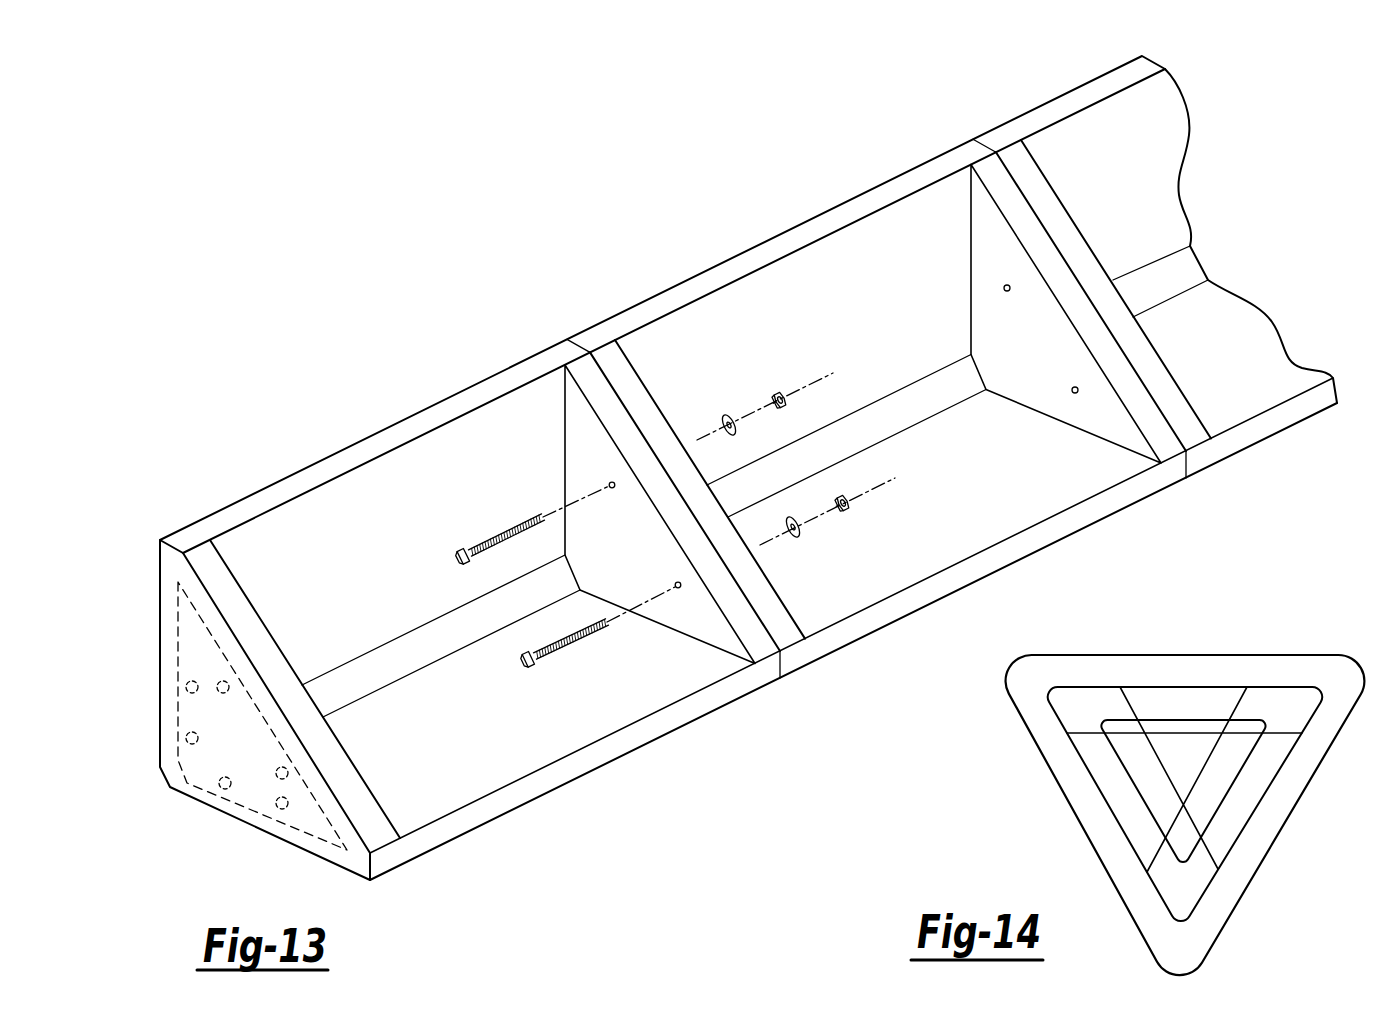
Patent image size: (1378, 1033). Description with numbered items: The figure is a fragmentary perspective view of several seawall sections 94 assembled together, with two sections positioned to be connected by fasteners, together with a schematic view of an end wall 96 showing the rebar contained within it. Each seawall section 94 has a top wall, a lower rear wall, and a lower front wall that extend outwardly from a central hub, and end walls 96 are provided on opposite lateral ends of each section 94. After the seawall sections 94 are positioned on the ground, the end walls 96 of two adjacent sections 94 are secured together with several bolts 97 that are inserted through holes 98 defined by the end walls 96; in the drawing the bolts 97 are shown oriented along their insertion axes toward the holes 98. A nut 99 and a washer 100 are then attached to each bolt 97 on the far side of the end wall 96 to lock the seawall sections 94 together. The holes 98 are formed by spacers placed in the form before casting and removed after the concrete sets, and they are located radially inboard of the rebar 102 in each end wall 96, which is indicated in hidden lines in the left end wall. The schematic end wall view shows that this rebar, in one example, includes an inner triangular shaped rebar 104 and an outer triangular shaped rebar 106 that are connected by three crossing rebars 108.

In FIG. 13, the seawall section 94 is at (347, 432).
In FIG. 13, the end wall 96 is at (228, 598).
In FIG. 13, the bolt 97 is at (612, 489).
In FIG. 13, the hole 98 is at (505, 532).
In FIG. 13, the nut 99 is at (777, 393).
In FIG. 13, the washer 100 is at (803, 538).
In FIG. 13, the rebar 102 is at (335, 800).
In FIG. 14, the inner triangular shaped rebar 104 is at (1230, 790).
In FIG. 14, the outer triangular shaped rebar 106 is at (1100, 793).
In FIG. 14, the crossing rebar 108 is at (1187, 733).